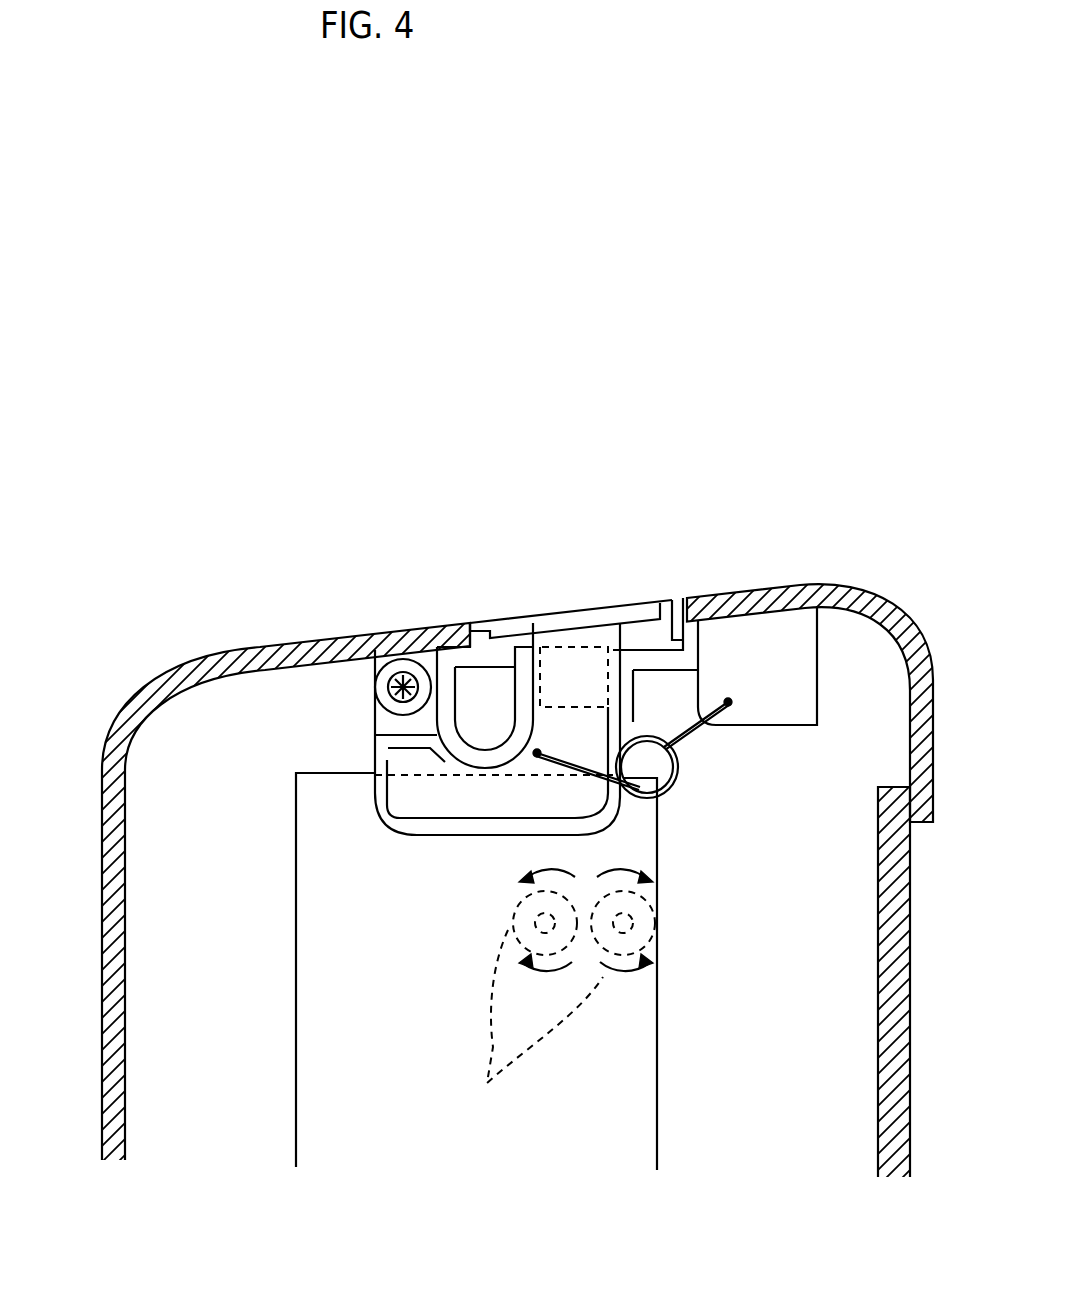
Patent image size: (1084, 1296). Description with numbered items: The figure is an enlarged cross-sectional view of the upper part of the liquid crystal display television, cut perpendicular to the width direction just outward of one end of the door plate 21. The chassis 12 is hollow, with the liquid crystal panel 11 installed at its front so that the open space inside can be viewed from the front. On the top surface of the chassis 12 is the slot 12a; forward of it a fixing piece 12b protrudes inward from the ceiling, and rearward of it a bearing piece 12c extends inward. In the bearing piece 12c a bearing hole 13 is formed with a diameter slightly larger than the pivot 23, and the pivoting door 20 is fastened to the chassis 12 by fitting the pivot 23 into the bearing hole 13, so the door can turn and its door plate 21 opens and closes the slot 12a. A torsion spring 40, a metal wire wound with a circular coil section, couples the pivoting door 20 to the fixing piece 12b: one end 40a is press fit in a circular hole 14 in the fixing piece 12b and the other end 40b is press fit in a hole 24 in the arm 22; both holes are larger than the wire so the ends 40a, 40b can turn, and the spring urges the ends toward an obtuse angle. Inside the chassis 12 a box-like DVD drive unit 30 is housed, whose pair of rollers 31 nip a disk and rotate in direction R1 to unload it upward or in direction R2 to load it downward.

The liquid crystal panel 11 is at (833, 1012).
The chassis 12 is at (260, 851).
The slot 12a is at (689, 549).
The fixing piece 12b is at (810, 646).
The bearing piece 12c is at (444, 569).
The bearing hole 13 is at (355, 624).
The circular hole 14 is at (775, 725).
The pivoting door 20 is at (550, 599).
The door plate 21 is at (571, 534).
The arm 22 is at (444, 680).
The pivot 23 is at (389, 603).
The hole 24 is at (460, 818).
The DVD drive unit 30 is at (423, 1001).
The rollers 31 is at (554, 1009).
The torsion spring 40 is at (686, 830).
The one end of torsion spring 40a is at (743, 798).
The other end of torsion spring 40b is at (518, 831).
The unloading rotation direction R1 is at (586, 856).
The loading rotation direction R2 is at (586, 987).